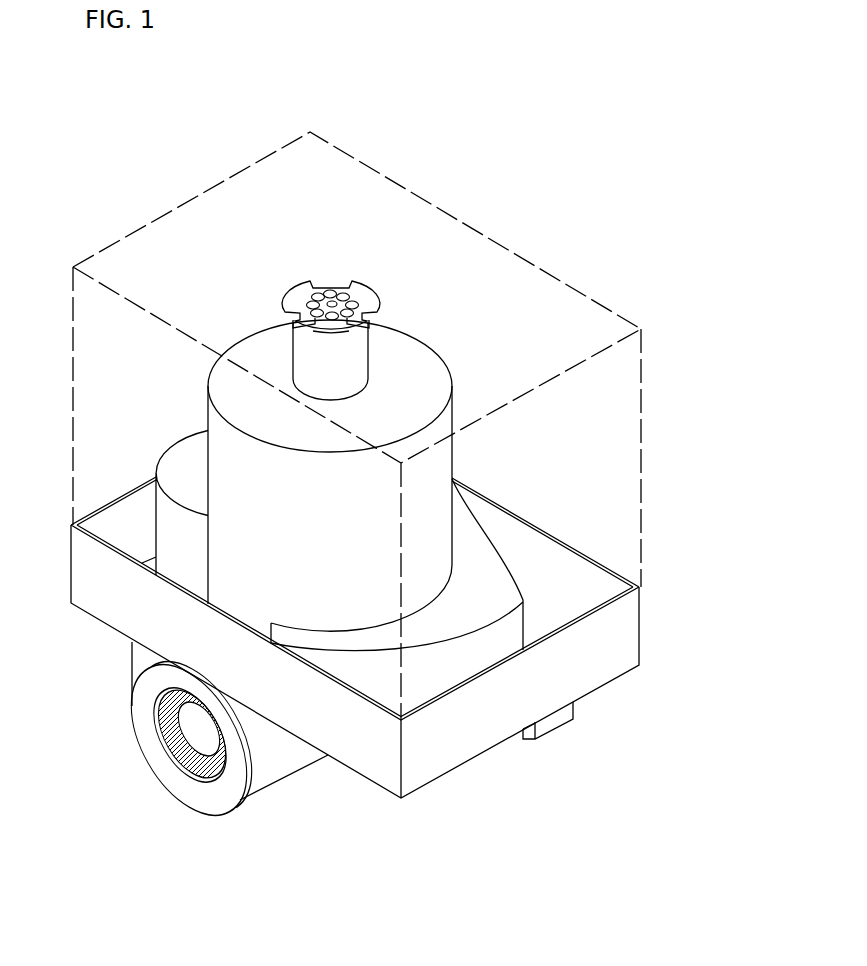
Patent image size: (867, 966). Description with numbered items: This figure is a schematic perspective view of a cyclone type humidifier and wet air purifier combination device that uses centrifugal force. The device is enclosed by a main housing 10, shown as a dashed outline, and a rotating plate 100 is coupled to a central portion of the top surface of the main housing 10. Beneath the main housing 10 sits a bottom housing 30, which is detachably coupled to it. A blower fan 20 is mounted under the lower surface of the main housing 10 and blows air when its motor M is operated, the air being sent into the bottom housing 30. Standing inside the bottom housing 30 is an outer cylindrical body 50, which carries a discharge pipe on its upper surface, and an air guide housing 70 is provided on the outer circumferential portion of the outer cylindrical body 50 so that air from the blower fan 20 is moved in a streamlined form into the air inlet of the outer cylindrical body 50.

The main housing 10 is at (642, 458).
The blower fan 20 is at (145, 730).
The bottom housing 30 is at (463, 732).
The outer cylindrical body 50 is at (413, 357).
The air guide housing 70 is at (193, 465).
The rotating plate 100 is at (331, 300).
The motor M is at (200, 732).